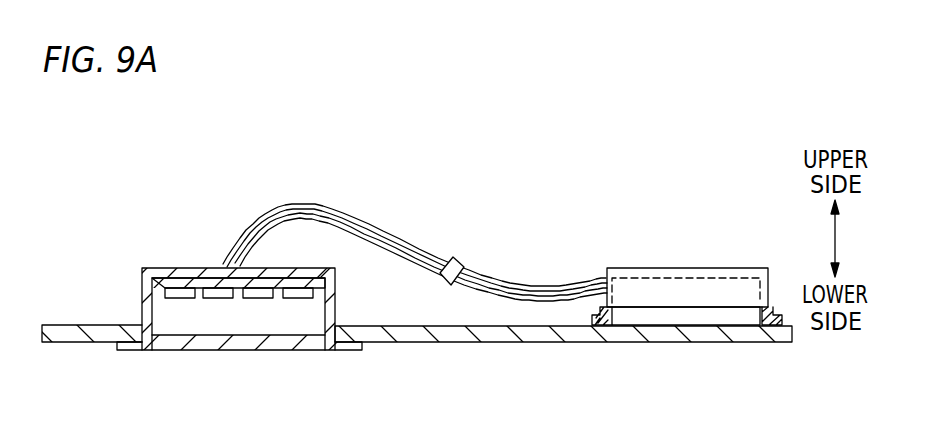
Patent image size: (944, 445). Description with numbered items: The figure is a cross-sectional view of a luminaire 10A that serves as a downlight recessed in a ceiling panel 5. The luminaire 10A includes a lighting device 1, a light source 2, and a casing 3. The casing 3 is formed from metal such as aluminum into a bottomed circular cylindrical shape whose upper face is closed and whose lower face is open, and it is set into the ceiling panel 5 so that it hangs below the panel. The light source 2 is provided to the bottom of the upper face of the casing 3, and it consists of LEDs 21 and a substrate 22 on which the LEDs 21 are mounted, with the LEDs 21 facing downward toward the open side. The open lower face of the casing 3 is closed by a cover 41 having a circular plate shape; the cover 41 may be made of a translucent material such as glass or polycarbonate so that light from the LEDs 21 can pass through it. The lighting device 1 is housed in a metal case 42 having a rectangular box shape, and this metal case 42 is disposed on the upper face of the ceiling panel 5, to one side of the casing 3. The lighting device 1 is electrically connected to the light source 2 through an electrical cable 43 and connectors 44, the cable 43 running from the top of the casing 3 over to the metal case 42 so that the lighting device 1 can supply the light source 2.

The luminaire 10A is at (437, 190).
The lighting device 1 is at (665, 285).
The light source 2 is at (246, 227).
The LEDs 21 is at (215, 293).
The substrate 22 is at (223, 283).
The casing 3 is at (336, 268).
The ceiling panel 5 is at (557, 335).
The cover 41 is at (203, 342).
The metal case 42 is at (714, 268).
The electrical cable 43 is at (366, 220).
The connectors 44 is at (460, 260).